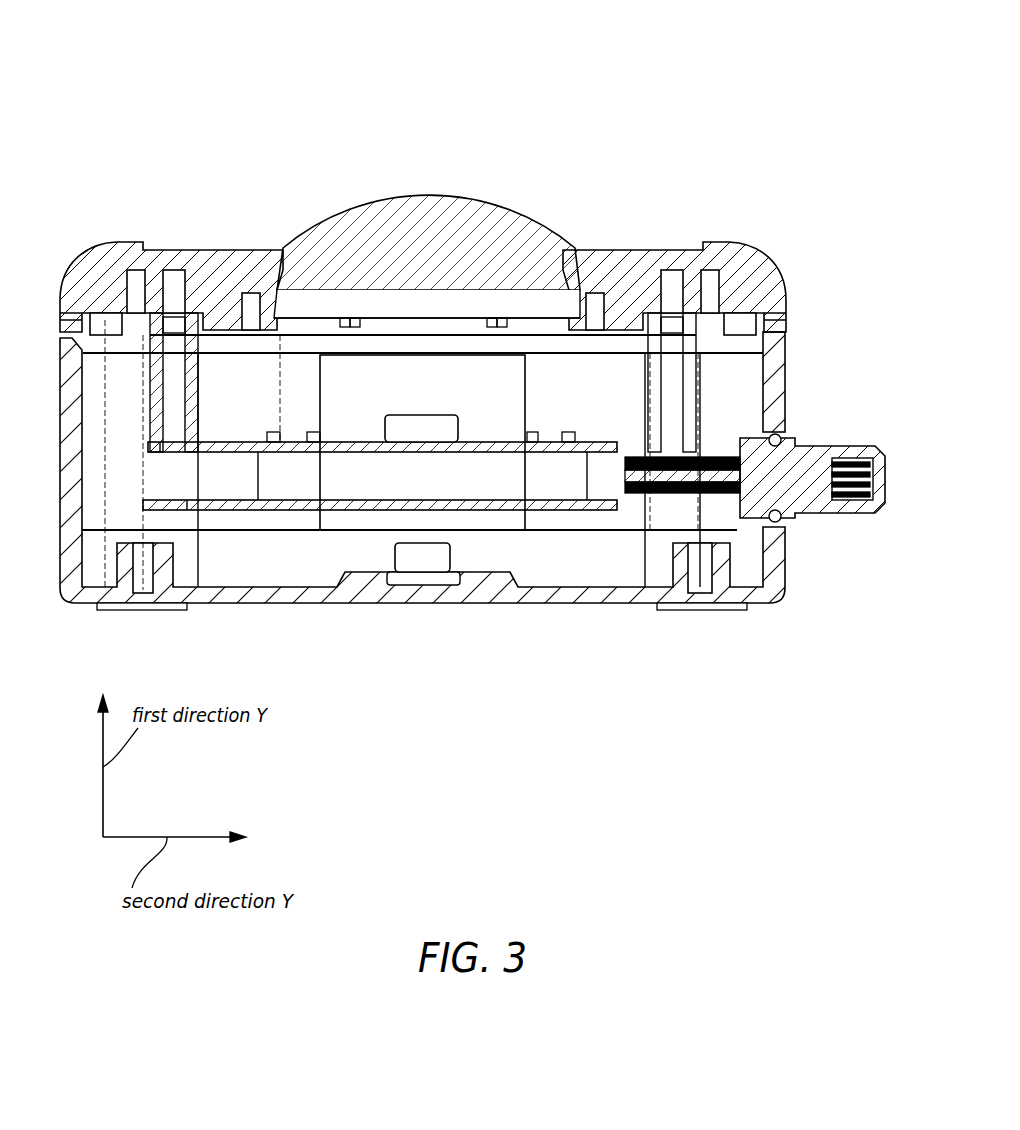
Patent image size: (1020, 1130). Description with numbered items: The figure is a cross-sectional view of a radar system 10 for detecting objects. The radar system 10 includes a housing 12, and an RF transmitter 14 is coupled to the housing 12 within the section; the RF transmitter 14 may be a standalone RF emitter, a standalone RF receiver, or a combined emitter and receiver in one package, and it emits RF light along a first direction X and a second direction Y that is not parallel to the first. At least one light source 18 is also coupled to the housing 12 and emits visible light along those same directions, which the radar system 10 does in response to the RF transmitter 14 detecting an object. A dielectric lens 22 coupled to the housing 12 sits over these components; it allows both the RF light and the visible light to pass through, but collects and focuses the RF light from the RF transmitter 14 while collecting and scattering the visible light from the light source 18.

The radar system 10 is at (472, 343).
The housing 12 is at (122, 293).
The RF transmitter 14 is at (423, 432).
The light source 18 is at (270, 308).
The dielectric lens 22 is at (470, 226).